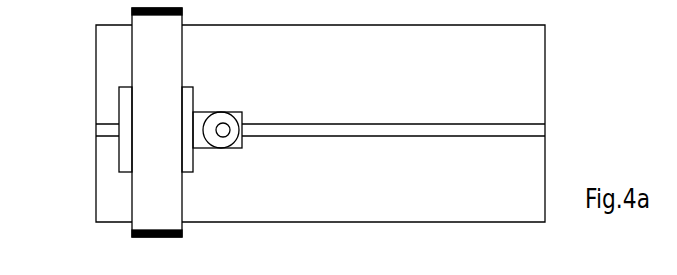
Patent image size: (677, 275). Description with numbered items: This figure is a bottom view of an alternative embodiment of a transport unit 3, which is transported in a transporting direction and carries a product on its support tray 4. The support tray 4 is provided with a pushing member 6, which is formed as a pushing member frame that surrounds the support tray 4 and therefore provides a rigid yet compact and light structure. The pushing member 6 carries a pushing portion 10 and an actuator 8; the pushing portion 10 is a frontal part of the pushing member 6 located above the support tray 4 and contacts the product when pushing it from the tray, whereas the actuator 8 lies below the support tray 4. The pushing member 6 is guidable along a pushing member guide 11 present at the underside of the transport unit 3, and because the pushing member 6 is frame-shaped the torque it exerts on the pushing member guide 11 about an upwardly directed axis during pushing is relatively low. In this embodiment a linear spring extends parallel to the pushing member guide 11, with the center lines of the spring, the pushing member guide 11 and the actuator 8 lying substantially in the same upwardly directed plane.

The transport unit 3 is at (538, 42).
The support tray 4 is at (532, 65).
The pushing member 6 is at (137, 52).
The actuator 8 is at (227, 137).
The pushing portion 10 is at (184, 185).
The pushing member guide 11 is at (513, 127).